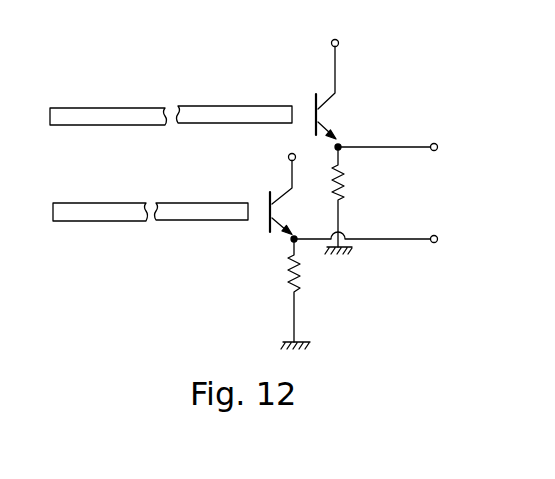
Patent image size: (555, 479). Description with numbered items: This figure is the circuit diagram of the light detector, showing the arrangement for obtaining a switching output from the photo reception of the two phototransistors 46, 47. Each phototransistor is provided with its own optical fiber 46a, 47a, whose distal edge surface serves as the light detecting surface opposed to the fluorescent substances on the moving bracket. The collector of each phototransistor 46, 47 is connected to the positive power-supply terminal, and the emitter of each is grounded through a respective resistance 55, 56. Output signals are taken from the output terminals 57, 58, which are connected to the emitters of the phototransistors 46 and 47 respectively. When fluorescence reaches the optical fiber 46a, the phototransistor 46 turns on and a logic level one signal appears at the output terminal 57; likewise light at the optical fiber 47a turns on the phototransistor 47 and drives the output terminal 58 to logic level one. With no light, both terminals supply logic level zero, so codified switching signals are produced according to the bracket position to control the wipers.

The optical fiber 46a is at (125, 108).
The optical fiber 47a is at (118, 202).
The phototransistor 46 is at (330, 119).
The phototransistor 47 is at (285, 212).
The resistance 55 is at (350, 187).
The resistance 56 is at (288, 283).
The output terminal 57 is at (438, 150).
The output terminal 58 is at (438, 242).